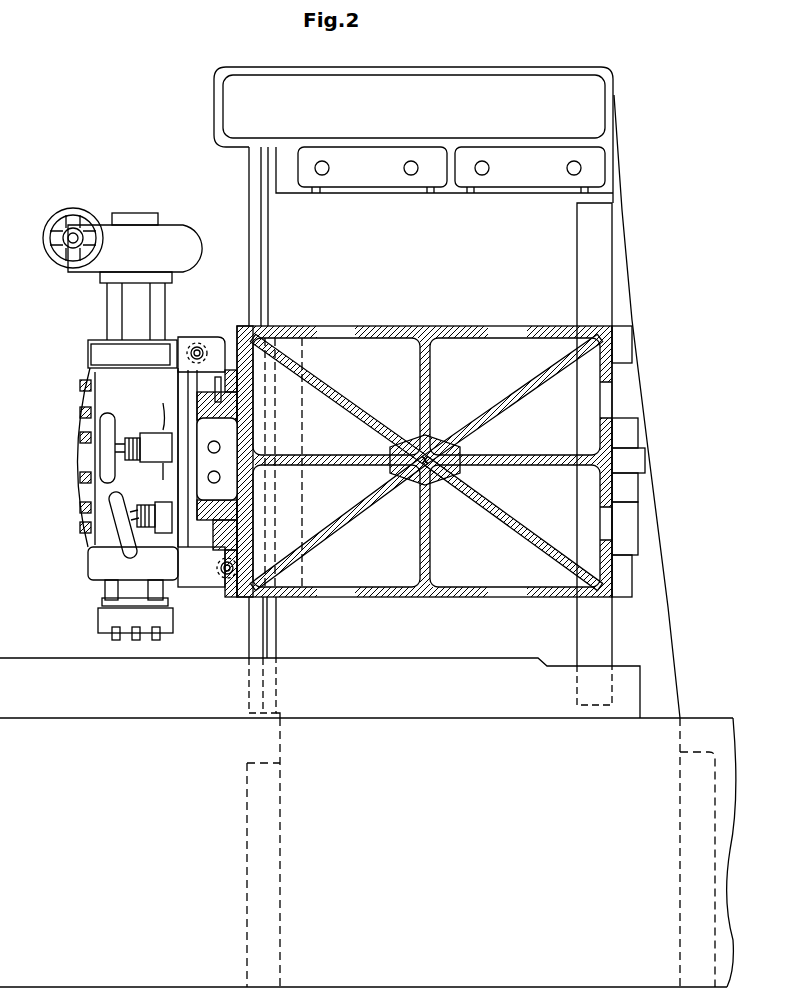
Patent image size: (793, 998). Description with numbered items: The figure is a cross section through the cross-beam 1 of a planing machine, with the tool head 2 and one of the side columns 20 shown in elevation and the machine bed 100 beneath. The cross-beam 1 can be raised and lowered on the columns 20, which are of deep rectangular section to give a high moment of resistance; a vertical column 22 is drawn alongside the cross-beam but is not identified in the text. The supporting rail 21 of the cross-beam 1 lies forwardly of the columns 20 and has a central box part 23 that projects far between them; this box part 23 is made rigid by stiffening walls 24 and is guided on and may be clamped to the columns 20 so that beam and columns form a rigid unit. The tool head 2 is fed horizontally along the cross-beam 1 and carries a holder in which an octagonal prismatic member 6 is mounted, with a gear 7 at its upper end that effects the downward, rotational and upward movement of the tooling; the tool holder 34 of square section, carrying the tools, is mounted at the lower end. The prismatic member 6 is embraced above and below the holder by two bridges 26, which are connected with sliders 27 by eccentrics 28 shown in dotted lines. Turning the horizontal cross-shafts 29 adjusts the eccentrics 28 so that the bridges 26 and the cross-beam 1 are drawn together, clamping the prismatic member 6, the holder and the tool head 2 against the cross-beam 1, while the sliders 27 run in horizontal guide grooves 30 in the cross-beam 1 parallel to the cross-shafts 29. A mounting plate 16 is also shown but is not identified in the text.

The cross-beam 1 is at (459, 445).
The tool head 2 is at (192, 389).
The prismatic member 6 is at (133, 307).
The gear 7 is at (103, 382).
The mounting plate 16 is at (110, 601).
The side columns 20 is at (556, 236).
The supporting rail 21 is at (242, 419).
The vertical column 22 is at (249, 177).
The central box part 23 is at (567, 392).
The stiffening walls 24 is at (565, 466).
The bridges 26 is at (107, 356).
The sliders 27 is at (240, 340).
The eccentrics 28 is at (188, 345).
The cross-shafts 29 is at (198, 346).
The guide grooves 30 is at (251, 385).
The tool holder 34 is at (110, 617).
The bed 100 is at (410, 704).